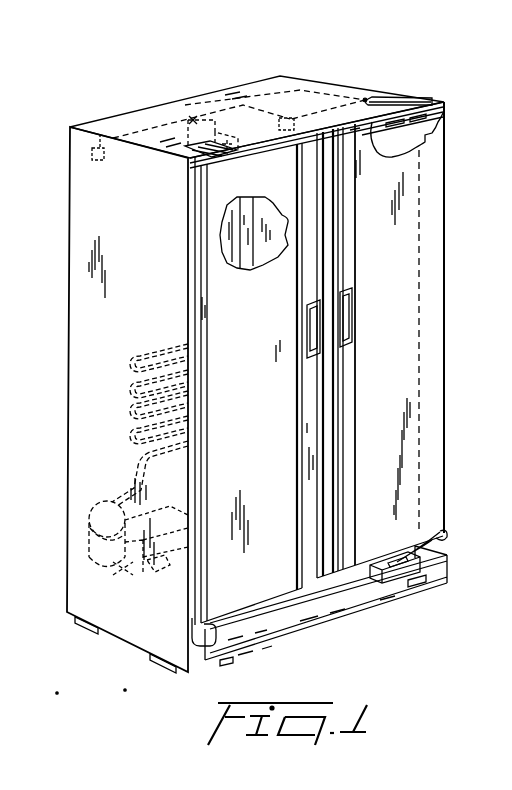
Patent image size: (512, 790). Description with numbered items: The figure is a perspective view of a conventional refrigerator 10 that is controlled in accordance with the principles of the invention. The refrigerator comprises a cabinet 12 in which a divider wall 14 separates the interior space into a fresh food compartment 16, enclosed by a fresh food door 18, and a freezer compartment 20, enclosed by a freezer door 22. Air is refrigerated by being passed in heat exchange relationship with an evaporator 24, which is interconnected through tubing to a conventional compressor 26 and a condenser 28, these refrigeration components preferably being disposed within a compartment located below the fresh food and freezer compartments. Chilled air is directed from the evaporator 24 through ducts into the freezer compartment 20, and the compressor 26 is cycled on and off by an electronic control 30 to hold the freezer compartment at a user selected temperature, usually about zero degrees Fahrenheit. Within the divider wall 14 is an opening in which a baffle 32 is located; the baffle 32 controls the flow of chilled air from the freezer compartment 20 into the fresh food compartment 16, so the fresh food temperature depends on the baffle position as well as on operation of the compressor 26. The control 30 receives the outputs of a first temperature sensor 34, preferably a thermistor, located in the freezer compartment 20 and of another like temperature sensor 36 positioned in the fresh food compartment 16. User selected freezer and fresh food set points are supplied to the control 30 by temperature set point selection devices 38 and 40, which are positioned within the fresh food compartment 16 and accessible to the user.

The refrigerator 10 is at (456, 85).
The cabinet 12 is at (130, 108).
The divider wall 14 is at (256, 268).
The fresh food compartment 16 is at (268, 198).
The fresh food door 18 is at (398, 289).
The freezer compartment 20 is at (236, 268).
The freezer door 22 is at (259, 381).
The evaporator 24 is at (137, 392).
The compressor 26 is at (89, 521).
The condenser 28 is at (128, 578).
The electronic control 30 is at (378, 580).
The baffle 32 is at (193, 120).
The first temperature sensor 34 is at (92, 160).
The temperature sensor 36 is at (292, 119).
The temperature set point selection device 38 is at (386, 140).
The temperature set point selection device 40 is at (445, 115).